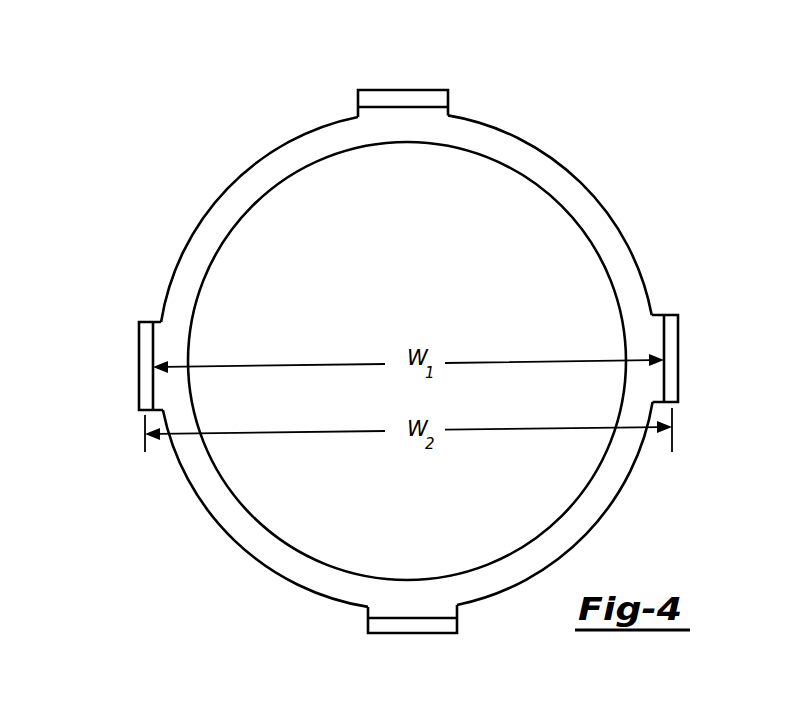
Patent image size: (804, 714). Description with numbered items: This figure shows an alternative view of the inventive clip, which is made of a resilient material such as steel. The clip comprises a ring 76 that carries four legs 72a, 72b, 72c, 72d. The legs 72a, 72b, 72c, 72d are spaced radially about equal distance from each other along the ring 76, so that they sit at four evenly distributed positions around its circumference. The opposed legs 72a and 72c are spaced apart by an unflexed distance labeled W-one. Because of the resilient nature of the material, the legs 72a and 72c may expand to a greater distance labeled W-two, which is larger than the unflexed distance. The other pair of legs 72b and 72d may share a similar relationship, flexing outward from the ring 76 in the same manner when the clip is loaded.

The ring 76 is at (567, 191).
The leg 72a is at (148, 344).
The leg 72b is at (416, 100).
The leg 72c is at (668, 333).
The leg 72d is at (430, 625).